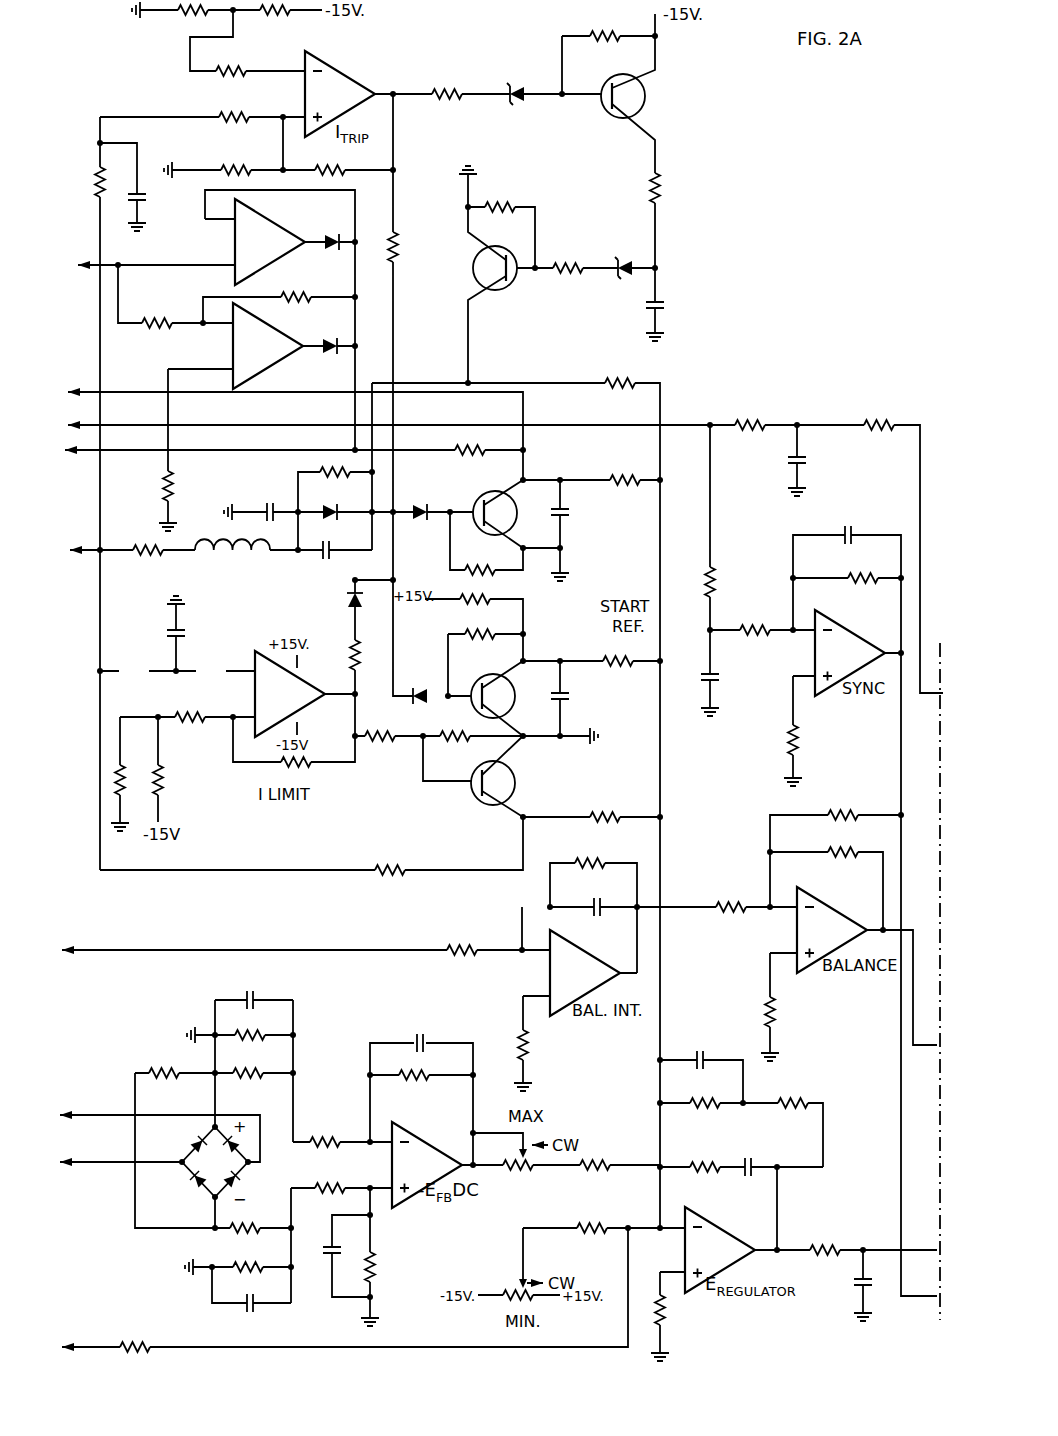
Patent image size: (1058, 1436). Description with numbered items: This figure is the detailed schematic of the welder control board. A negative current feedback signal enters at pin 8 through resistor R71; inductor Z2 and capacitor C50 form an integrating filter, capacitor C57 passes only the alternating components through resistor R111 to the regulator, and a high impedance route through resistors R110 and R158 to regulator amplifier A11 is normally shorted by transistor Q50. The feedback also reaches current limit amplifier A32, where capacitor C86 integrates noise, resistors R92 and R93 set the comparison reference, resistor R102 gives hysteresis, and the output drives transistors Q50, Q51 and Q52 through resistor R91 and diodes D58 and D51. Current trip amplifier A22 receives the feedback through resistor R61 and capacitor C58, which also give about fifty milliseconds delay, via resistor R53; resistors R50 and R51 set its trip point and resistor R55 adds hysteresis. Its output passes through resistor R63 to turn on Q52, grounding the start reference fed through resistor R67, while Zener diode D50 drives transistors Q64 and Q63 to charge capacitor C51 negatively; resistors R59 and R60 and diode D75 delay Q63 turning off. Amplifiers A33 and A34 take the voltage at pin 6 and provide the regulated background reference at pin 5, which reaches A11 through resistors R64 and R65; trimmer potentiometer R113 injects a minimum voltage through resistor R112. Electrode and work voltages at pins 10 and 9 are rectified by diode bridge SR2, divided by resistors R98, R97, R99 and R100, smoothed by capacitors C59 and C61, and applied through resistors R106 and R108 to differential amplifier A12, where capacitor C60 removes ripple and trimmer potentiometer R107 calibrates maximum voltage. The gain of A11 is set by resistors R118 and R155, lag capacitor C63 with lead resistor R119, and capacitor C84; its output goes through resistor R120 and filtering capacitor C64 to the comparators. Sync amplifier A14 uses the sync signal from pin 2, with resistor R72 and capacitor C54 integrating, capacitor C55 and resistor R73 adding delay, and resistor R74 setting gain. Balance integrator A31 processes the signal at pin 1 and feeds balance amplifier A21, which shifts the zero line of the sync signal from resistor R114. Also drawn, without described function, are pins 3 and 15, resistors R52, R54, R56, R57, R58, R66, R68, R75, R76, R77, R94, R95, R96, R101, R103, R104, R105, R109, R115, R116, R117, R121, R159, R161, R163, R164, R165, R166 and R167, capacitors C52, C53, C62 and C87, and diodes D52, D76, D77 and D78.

The resistor R50 is at (190, 26).
The resistor R51 is at (275, 26).
The resistor R52 is at (239, 60).
The resistor R53 is at (236, 105).
The resistor R54 is at (237, 158).
The resistor R55 is at (331, 159).
The resistor R56 is at (605, 25).
The resistor R57 is at (448, 81).
The resistor R58 is at (672, 188).
The resistor R59 is at (504, 195).
The resistor R60 is at (568, 255).
The resistor R61 is at (83, 180).
The resistor R63 is at (410, 247).
The resistor R64 is at (458, 462).
The resistor R65 is at (625, 468).
The resistor R66 is at (483, 559).
The resistor R67 is at (491, 591).
The resistor R68 is at (466, 627).
The resistor R71 is at (148, 566).
The resistor R72 is at (727, 582).
The resistor R73 is at (757, 618).
The resistor R74 is at (868, 566).
The resistor R75 is at (810, 740).
The resistor R76 is at (752, 412).
The resistor R77 is at (880, 412).
The resistor R91 is at (337, 655).
The resistor R92 is at (133, 773).
The resistor R93 is at (176, 782).
The resistor R94 is at (387, 1265).
The resistor R95 is at (164, 1060).
The resistor R96 is at (540, 1045).
The resistor R97 is at (261, 1024).
The resistor R98 is at (258, 1061).
The resistor R99 is at (253, 1217).
The resistor R100 is at (264, 1256).
The resistor R101 is at (195, 705).
The resistor R102 is at (311, 751).
The resistor R103 is at (458, 724).
The resistor R104 is at (385, 723).
The resistor R105 is at (430, 1087).
The resistor R106 is at (331, 1129).
The trimmer potentiometer R107 is at (524, 1180).
The resistor R108 is at (335, 1175).
The resistor R109 is at (606, 1152).
The resistor R110 is at (395, 858).
The resistor R111 is at (625, 370).
The resistor R112 is at (597, 1215).
The trimmer potentiometer R113 is at (510, 1285).
The resistor R114 is at (848, 802).
The resistor R115 is at (853, 866).
The resistor R116 is at (733, 894).
The resistor R117 is at (792, 1012).
The D.C. gain resistor R118 is at (709, 1116).
The lead resistor R119 is at (719, 1153).
The resistor R120 is at (831, 1237).
The resistor R121 is at (683, 1321).
The D.C. gain resistor R155 is at (797, 1116).
The resistor R158 is at (611, 805).
The resistor R159 is at (467, 937).
The resistor R161 is at (348, 486).
The resistor R163 is at (600, 851).
The resistor R164 is at (148, 1335).
The resistor R165 is at (149, 484).
The resistor R166 is at (161, 311).
The resistor R167 is at (304, 285).
The capacitor C50 is at (277, 495).
The capacitor C51 is at (670, 305).
The capacitor C52 is at (577, 512).
The capacitor C53 is at (577, 695).
The capacitor C54 is at (725, 675).
The capacitor C55 is at (864, 524).
The capacitor C57 is at (316, 564).
The capacitor C58 is at (152, 198).
The capacitor C59 is at (267, 991).
The capacitor C60 is at (435, 1032).
The capacitor C61 is at (267, 1315).
The capacitor C62 is at (319, 1261).
The lag capacitor C63 is at (752, 1179).
The filtering capacitor C64 is at (847, 1283).
The capacitor C84 is at (704, 1049).
The capacitor C86 is at (192, 633).
The capacitor C87 is at (611, 898).
The Zener diode D50 is at (525, 83).
The diode D51 is at (433, 501).
The diode D52 is at (421, 683).
The diode D58 is at (336, 606).
The diode D75 is at (631, 257).
The diode D76 is at (344, 521).
The diode D77 is at (338, 335).
The diode D78 is at (331, 230).
The transistor Q50 is at (511, 783).
The transistor Q51 is at (510, 513).
The transistor Q52 is at (510, 696).
The transistor Q63 is at (508, 278).
The transistor Q64 is at (642, 96).
The current trip operational amplifier A22 is at (340, 94).
The operational amplifier A34 is at (270, 242).
The operational amplifier A33 is at (268, 346).
The current limit operational amplifier A32 is at (290, 694).
The balance integrator operational amplifier A31 is at (585, 973).
The sync amplifier A14 is at (850, 653).
The balance amplifier A21 is at (832, 930).
The differential amplifier A12 is at (427, 1165).
The regulator amplifier A11 is at (720, 1250).
The inductor Z2 is at (232, 567).
The diode bridge SR2 is at (215, 1162).
The pin 1 is at (61, 949).
The pin 2 is at (58, 415).
The PEAK CLAMP terminal 3 is at (69, 375).
The pin 5 is at (70, 471).
The pin 6 is at (69, 263).
The pin 8 is at (63, 552).
The pin 9 is at (67, 1159).
The pin 10 is at (81, 1113).
The BACKGROUND INPUT terminal 15 is at (79, 1335).